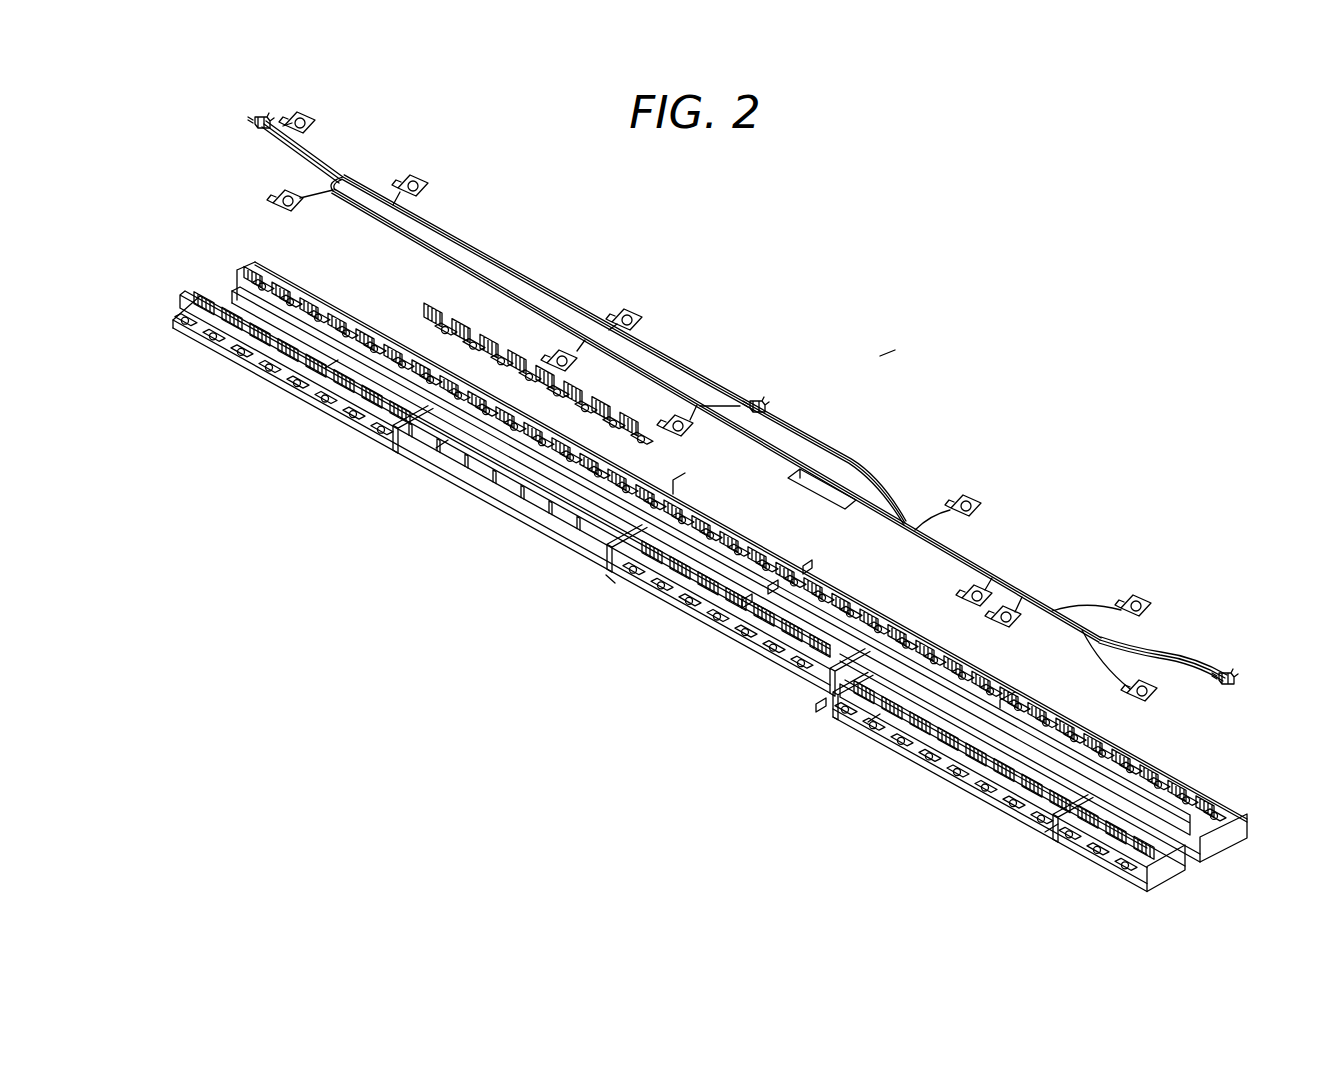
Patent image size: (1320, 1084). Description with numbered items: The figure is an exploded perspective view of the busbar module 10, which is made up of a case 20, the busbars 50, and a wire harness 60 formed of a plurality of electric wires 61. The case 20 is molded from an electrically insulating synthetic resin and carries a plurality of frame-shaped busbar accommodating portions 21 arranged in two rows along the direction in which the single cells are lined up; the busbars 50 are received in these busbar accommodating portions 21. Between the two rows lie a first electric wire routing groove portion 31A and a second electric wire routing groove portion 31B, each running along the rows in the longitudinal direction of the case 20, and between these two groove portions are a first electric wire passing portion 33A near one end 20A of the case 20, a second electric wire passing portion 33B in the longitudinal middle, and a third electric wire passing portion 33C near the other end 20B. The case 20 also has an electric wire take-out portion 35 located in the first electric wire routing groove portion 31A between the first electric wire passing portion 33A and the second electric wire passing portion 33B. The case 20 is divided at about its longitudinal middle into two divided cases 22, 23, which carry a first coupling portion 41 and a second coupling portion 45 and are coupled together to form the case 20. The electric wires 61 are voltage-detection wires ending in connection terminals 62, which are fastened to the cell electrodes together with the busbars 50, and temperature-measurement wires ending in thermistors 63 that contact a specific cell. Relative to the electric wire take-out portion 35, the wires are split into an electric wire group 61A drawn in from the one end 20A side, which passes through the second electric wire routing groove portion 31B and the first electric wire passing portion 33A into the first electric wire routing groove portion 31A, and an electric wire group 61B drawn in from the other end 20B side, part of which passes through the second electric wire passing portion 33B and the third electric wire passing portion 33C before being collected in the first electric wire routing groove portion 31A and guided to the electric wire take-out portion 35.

The busbar module 10 is at (890, 345).
The case 20 is at (656, 615).
The one end (first end) of the case 20A is at (222, 297).
The other end (second end) of the case 20B is at (1192, 870).
The busbar accommodating portion 21 is at (340, 303).
The divided case 22 is at (790, 472).
The divided case 23 is at (1008, 692).
The first electric wire routing groove portion 31A is at (606, 580).
The second electric wire routing groove portion 31B is at (671, 493).
The first electric wire passing portion 33A is at (330, 370).
The second electric wire passing portion 33B is at (872, 718).
The third electric wire passing portion 33C is at (1050, 828).
The electric wire take-out portion 35 is at (438, 448).
The first coupling portion 41 is at (809, 568).
The second coupling portion 45 is at (746, 600).
The busbar 50 is at (300, 302).
The wire harness 60 is at (850, 480).
The electric wire 61 is at (715, 382).
The electric wire group 61A is at (413, 237).
The electric wire group 61B is at (872, 468).
The connection terminal 62 is at (320, 125).
The thermistor 63 is at (248, 124).